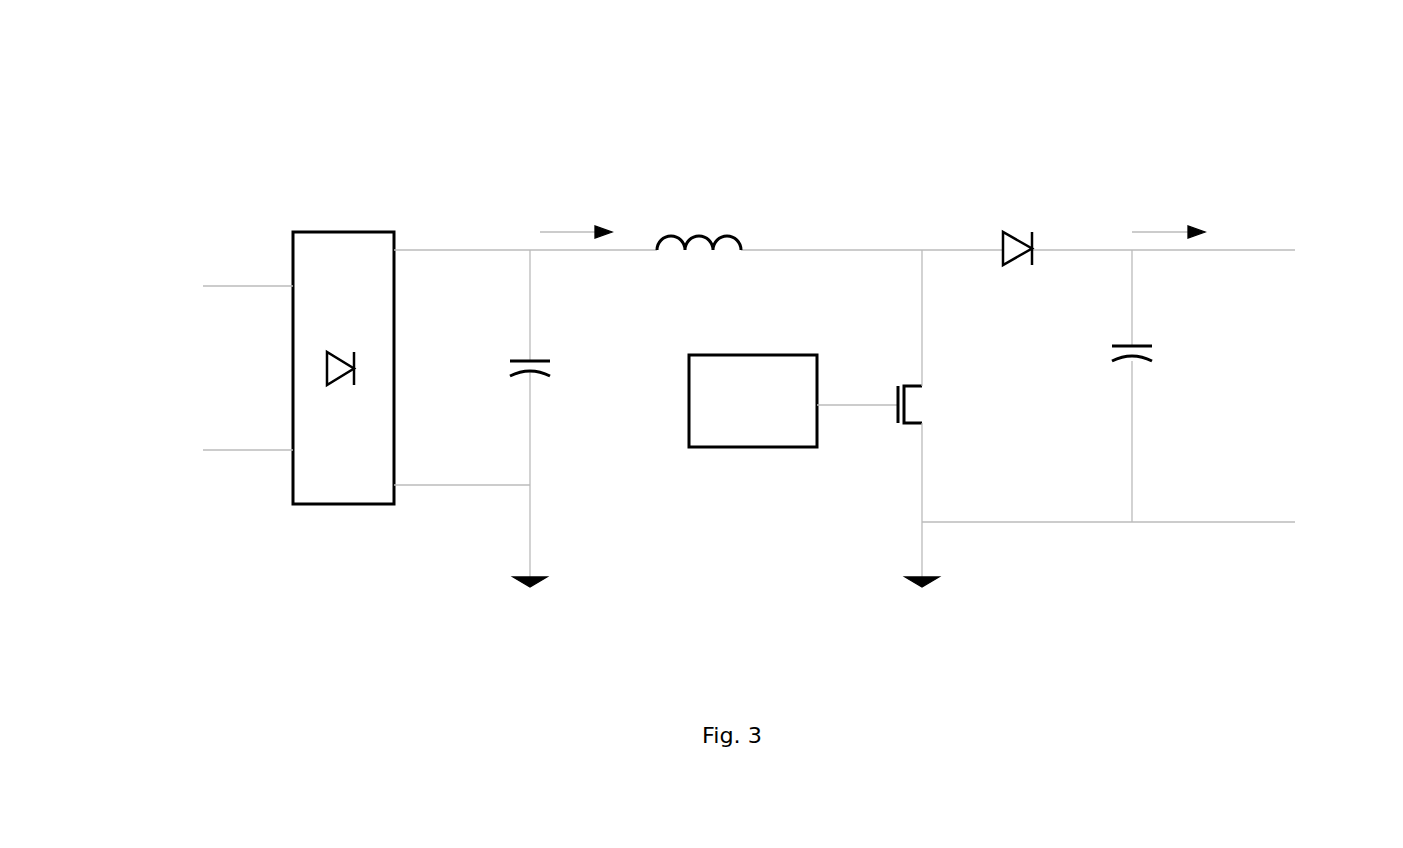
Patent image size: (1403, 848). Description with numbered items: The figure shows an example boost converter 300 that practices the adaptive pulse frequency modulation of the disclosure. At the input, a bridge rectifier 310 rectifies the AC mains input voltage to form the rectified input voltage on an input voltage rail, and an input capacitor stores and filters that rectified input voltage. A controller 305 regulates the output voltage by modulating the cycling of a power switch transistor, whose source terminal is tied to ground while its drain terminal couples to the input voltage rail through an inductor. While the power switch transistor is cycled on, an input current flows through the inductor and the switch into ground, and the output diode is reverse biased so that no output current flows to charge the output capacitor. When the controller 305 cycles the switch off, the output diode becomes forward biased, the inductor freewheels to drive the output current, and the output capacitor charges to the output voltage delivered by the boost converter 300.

The boost converter 300 is at (647, 76).
The controller 305 is at (787, 447).
The bridge rectifier 310 is at (332, 231).